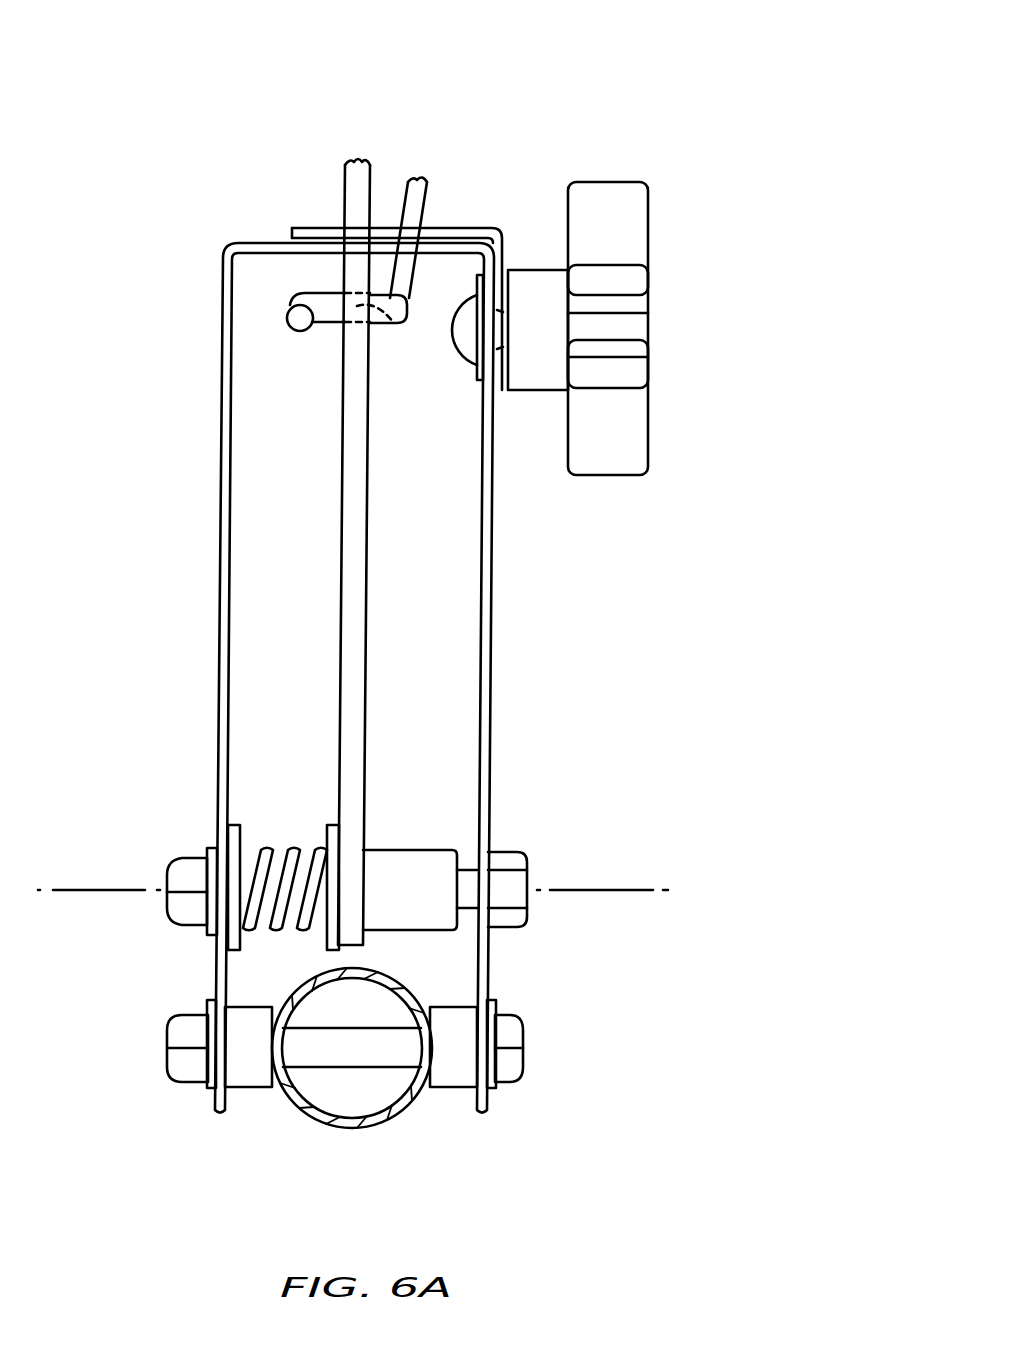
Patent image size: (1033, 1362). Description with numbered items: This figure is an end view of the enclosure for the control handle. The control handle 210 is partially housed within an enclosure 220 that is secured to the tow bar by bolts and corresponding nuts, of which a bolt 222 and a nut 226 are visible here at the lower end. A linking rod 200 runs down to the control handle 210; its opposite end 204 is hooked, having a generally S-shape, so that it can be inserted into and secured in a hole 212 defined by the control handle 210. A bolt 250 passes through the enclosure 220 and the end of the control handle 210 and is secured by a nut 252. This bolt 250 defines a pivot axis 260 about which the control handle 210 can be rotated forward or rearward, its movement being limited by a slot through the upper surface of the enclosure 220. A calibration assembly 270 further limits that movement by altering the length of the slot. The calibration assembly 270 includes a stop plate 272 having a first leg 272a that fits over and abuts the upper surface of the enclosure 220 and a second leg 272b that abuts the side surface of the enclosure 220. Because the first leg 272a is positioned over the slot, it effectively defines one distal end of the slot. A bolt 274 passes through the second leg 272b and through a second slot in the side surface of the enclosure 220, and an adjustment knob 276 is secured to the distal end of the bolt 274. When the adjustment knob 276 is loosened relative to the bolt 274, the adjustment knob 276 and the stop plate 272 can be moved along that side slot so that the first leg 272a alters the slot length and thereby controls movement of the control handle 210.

The linking rod 200 is at (423, 193).
The opposite end 204 is at (328, 310).
The control handle 210 is at (348, 163).
The hole 212 is at (393, 327).
The enclosure 220 is at (220, 333).
The bolt 222 is at (517, 1063).
The nut 226 is at (183, 1068).
The bolt 250 is at (517, 860).
The nut 252 is at (183, 865).
The pivot axis 260 is at (597, 888).
The calibration assembly 270 is at (543, 103).
The stop plate 272 is at (498, 230).
The first leg 272a is at (305, 226).
The second leg 272b is at (496, 390).
The bolt 274 is at (463, 348).
The adjustment knob 276 is at (632, 192).